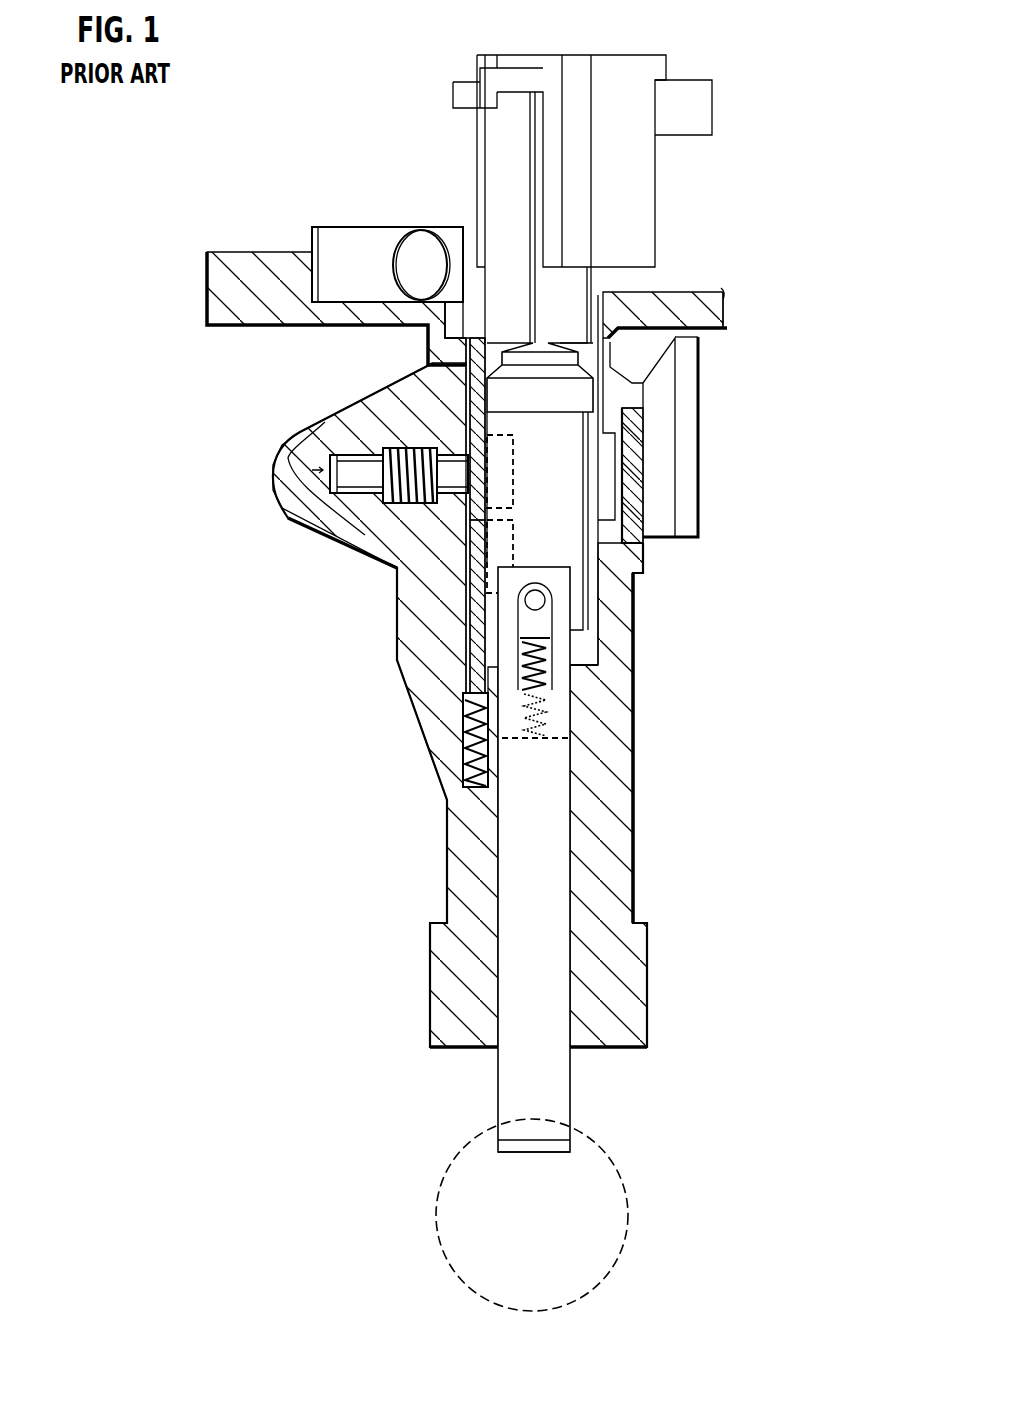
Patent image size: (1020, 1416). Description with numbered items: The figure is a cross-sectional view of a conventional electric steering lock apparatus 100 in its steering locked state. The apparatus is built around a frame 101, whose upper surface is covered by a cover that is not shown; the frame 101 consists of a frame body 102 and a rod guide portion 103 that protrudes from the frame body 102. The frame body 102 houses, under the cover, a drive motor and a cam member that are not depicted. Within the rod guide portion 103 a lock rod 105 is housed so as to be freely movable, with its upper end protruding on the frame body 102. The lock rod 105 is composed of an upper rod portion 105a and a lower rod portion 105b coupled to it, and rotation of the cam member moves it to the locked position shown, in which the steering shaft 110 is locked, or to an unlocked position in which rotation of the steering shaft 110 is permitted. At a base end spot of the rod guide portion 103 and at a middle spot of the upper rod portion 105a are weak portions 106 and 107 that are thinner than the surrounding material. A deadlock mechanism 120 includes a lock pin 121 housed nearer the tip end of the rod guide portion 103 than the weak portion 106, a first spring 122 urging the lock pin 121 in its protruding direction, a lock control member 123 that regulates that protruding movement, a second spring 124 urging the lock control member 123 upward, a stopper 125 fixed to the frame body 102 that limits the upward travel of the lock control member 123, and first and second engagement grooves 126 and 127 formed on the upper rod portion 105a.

The electric steering lock apparatus 100 is at (288, 140).
The frame 101 is at (399, 649).
The frame body 102 is at (255, 300).
The rod guide portion 103 is at (413, 607).
The lock rod 105 is at (648, 859).
The upper rod portion 105a is at (633, 575).
The lower rod portion 105b is at (542, 770).
The weak portion 106 is at (437, 345).
The weak portion 107 is at (573, 366).
The steering shaft 110 is at (625, 1213).
The deadlock mechanism 120 is at (288, 456).
The lock pin 121 is at (452, 468).
The first spring 122 is at (388, 505).
The lock control member 123 is at (472, 640).
The second spring 124 is at (467, 717).
The stopper 125 is at (453, 240).
The first engagement groove 126 is at (512, 455).
The second engagement groove 127 is at (512, 531).